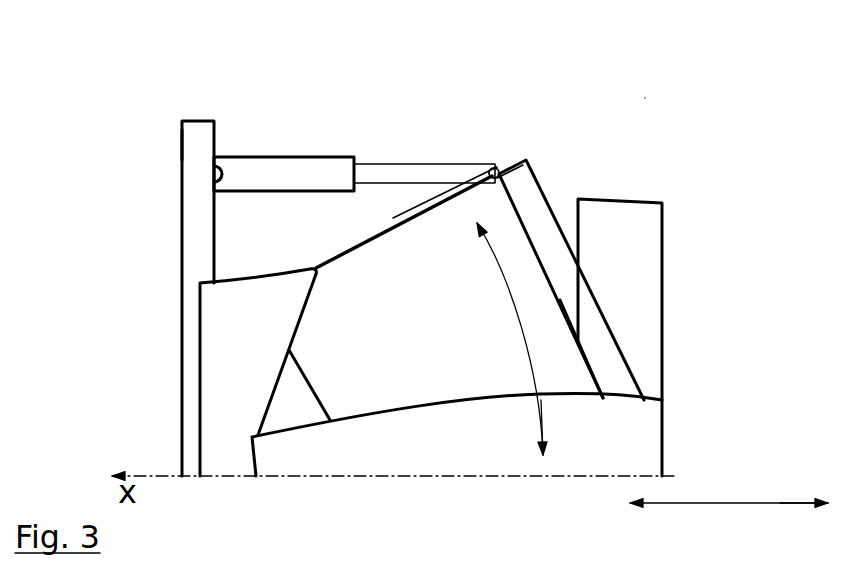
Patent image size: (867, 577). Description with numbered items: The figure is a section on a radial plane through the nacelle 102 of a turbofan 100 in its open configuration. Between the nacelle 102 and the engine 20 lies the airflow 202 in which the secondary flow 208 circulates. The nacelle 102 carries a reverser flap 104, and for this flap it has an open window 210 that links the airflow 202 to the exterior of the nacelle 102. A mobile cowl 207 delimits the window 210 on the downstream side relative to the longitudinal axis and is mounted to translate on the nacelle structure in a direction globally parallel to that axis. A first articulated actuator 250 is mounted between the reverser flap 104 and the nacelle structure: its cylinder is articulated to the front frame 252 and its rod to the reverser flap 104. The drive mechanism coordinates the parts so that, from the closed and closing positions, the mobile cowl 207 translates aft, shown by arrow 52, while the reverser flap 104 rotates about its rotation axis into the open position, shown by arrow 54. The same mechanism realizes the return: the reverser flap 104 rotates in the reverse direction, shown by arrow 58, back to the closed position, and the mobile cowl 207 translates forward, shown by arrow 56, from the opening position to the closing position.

The turbofan 100 is at (650, 103).
The nacelle 102 is at (148, 158).
The reverser flap 104 is at (553, 240).
The engine 20 is at (468, 450).
The airflow 202 is at (560, 365).
The mobile cowl 207 is at (645, 268).
The secondary flow 208 is at (395, 190).
The window 210 is at (333, 248).
The first articulated actuator 250 is at (297, 172).
The front frame 252 is at (193, 263).
The rotation arrow 54 is at (567, 431).
The reverse rotation arrow 58 is at (497, 339).
The forward translation arrow 56 is at (727, 529).
The aft translation arrow 52 is at (810, 531).